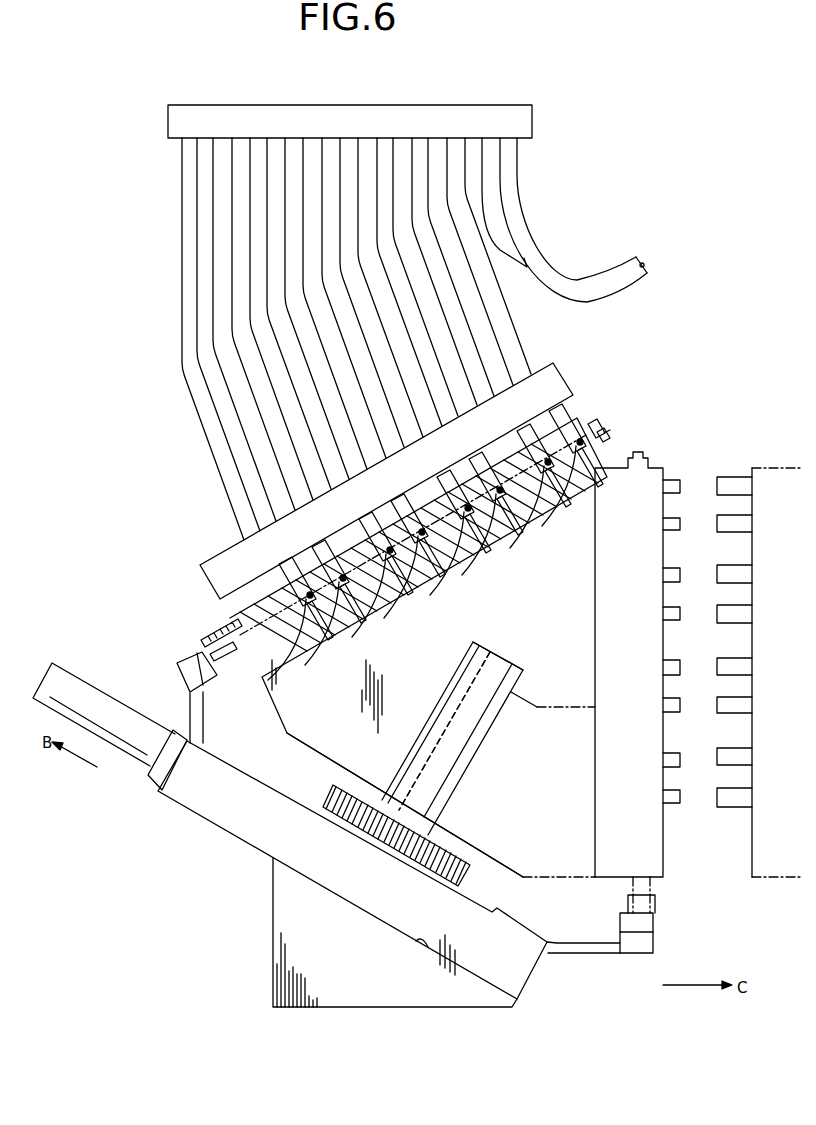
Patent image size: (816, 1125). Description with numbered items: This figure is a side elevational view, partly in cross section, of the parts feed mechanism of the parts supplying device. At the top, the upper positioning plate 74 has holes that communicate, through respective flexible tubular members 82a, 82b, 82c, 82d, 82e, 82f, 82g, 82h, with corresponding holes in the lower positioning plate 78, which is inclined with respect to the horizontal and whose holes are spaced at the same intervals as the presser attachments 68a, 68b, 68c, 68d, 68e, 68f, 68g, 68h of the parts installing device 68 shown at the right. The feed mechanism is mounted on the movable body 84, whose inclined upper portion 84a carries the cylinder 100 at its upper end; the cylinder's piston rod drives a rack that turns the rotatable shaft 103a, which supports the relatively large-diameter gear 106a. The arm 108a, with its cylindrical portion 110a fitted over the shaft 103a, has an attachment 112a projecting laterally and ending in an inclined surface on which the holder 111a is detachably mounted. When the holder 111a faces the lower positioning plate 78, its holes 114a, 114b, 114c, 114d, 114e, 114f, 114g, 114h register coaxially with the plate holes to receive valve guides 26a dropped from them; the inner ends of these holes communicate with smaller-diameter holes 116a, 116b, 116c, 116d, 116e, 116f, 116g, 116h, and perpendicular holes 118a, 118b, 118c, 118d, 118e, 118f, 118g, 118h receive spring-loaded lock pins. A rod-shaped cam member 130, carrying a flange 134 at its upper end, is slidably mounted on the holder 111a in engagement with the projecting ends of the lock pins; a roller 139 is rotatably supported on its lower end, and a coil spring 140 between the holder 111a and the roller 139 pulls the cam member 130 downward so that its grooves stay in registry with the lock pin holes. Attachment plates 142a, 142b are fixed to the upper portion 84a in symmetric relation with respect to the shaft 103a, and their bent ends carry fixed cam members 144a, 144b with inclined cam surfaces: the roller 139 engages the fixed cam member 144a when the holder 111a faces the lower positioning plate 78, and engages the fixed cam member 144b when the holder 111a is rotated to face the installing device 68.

The upper positioning plate 74 is at (366, 110).
The flexible tubular member 82a is at (187, 207).
The flexible tubular member 82b is at (222, 245).
The flexible tubular member 82c is at (255, 280).
The flexible tubular member 82d is at (335, 399).
The flexible tubular member 82e is at (342, 298).
The flexible tubular member 82f is at (407, 342).
The flexible tubular member 82g is at (415, 234).
The flexible tubular member 82h is at (486, 300).
The lower positioning plate 78 is at (558, 375).
The hole 114a is at (290, 602).
The hole 114b is at (348, 626).
The hole 114c is at (370, 532).
The hole 114d is at (410, 544).
The hole 114e is at (443, 480).
The hole 114f is at (480, 463).
The hole 114g is at (542, 498).
The hole 114h is at (556, 420).
The smaller-diameter hole 116a is at (317, 651).
The smaller-diameter hole 116b is at (353, 624).
The smaller-diameter hole 116c is at (390, 600).
The smaller-diameter hole 116d is at (430, 560).
The smaller-diameter hole 116e is at (477, 518).
The smaller-diameter hole 116f is at (515, 506).
The smaller-diameter hole 116g is at (553, 480).
The smaller-diameter hole 116h is at (582, 474).
The hole 118a is at (309, 592).
The hole 118b is at (345, 600).
The hole 118c is at (390, 548).
The hole 118d is at (433, 543).
The hole 118e is at (502, 488).
The hole 118f is at (500, 488).
The hole 118g is at (552, 466).
The hole 118h is at (581, 437).
The valve guide 26a is at (296, 600).
The cam member 130 is at (602, 428).
The flange 134 is at (605, 440).
The parts installing device 68 is at (780, 865).
The presser attachment 68a is at (733, 802).
The presser attachment 68b is at (733, 760).
The presser attachment 68c is at (737, 708).
The presser attachment 68d is at (735, 670).
The presser attachment 68e is at (735, 617).
The presser attachment 68f is at (748, 562).
The presser attachment 68g is at (720, 530).
The presser attachment 68h is at (725, 485).
The fixed cam member 144b is at (640, 922).
The attachment plate 142b is at (568, 948).
The movable body 84 is at (382, 990).
The upper portion 84a is at (430, 955).
The cylinder 100 is at (108, 715).
The attachment plate 142a is at (198, 723).
The fixed cam member 144a is at (197, 667).
The roller 139 is at (205, 658).
The coil spring 140 is at (235, 658).
The holder 111a is at (293, 648).
The attachment 112a is at (347, 742).
The arm 108a is at (467, 647).
The cylindrical portion 110a is at (523, 672).
The rotatable shaft 103a is at (440, 770).
The gear 106a is at (440, 858).